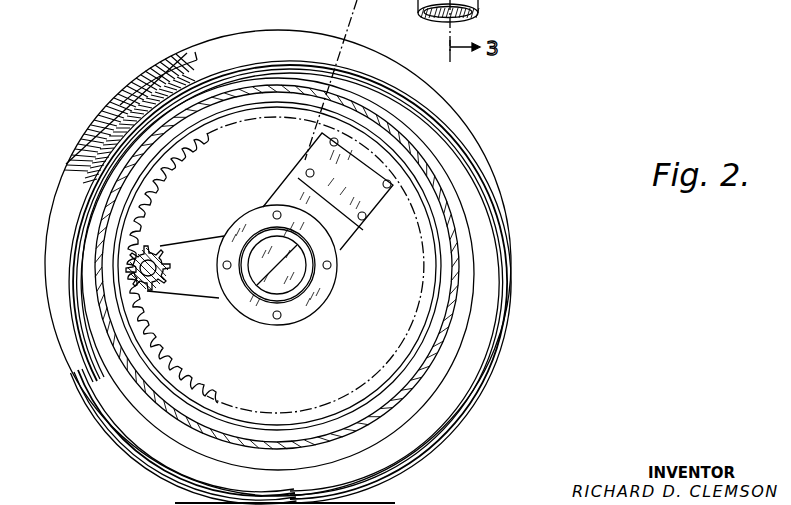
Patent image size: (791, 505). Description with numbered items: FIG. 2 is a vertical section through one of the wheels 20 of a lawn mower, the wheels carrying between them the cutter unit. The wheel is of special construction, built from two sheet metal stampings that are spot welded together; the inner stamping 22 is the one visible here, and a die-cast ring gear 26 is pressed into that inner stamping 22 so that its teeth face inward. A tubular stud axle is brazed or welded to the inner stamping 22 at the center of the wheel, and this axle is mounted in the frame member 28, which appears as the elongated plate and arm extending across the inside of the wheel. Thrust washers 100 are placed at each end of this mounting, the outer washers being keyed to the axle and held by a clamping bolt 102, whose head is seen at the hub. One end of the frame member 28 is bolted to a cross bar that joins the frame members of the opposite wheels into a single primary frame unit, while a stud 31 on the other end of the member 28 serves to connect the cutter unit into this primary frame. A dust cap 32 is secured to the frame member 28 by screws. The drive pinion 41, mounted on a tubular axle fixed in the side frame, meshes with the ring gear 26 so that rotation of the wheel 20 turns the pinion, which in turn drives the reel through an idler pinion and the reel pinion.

The wheel 20 is at (148, 75).
The inner stamping 22 is at (156, 152).
The ring gear 26 is at (143, 200).
The frame member 28 is at (238, 306).
The stud 31 is at (166, 272).
The dust cap 32 is at (100, 303).
The drive pinion 41 is at (158, 252).
The thrust washer 100 is at (298, 298).
The clamping bolt 102 is at (296, 273).